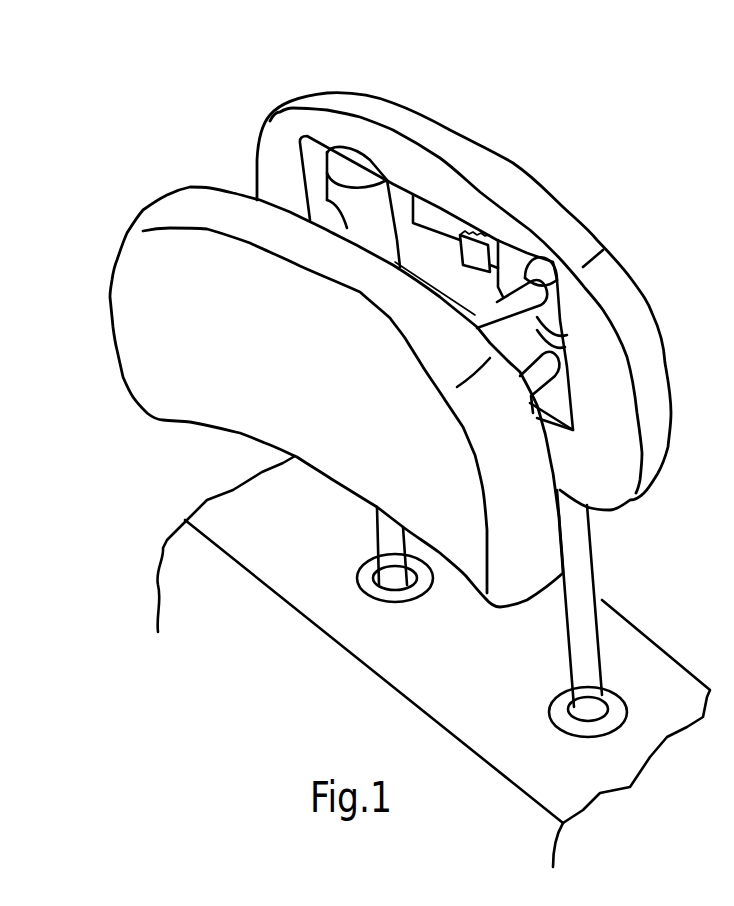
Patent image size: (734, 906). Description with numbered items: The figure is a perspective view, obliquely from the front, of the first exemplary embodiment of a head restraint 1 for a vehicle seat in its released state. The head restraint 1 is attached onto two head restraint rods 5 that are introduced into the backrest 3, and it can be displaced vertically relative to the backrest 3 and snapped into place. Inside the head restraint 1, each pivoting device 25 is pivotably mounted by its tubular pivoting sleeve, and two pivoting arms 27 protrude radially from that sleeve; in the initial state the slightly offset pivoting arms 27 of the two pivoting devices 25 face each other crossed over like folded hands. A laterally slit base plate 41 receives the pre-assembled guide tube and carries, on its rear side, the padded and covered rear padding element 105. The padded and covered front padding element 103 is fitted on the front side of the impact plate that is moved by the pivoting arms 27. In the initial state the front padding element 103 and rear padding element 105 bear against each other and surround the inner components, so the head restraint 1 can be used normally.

The head restraint 1 is at (243, 152).
The backrest 3 is at (273, 553).
The head restraint rods 5 is at (392, 540).
The pivoting device 25 is at (553, 395).
The pivoting arms 27 is at (510, 310).
The base plate 41 is at (408, 255).
The front padding element 103 is at (313, 378).
The rear padding element 105 is at (487, 180).